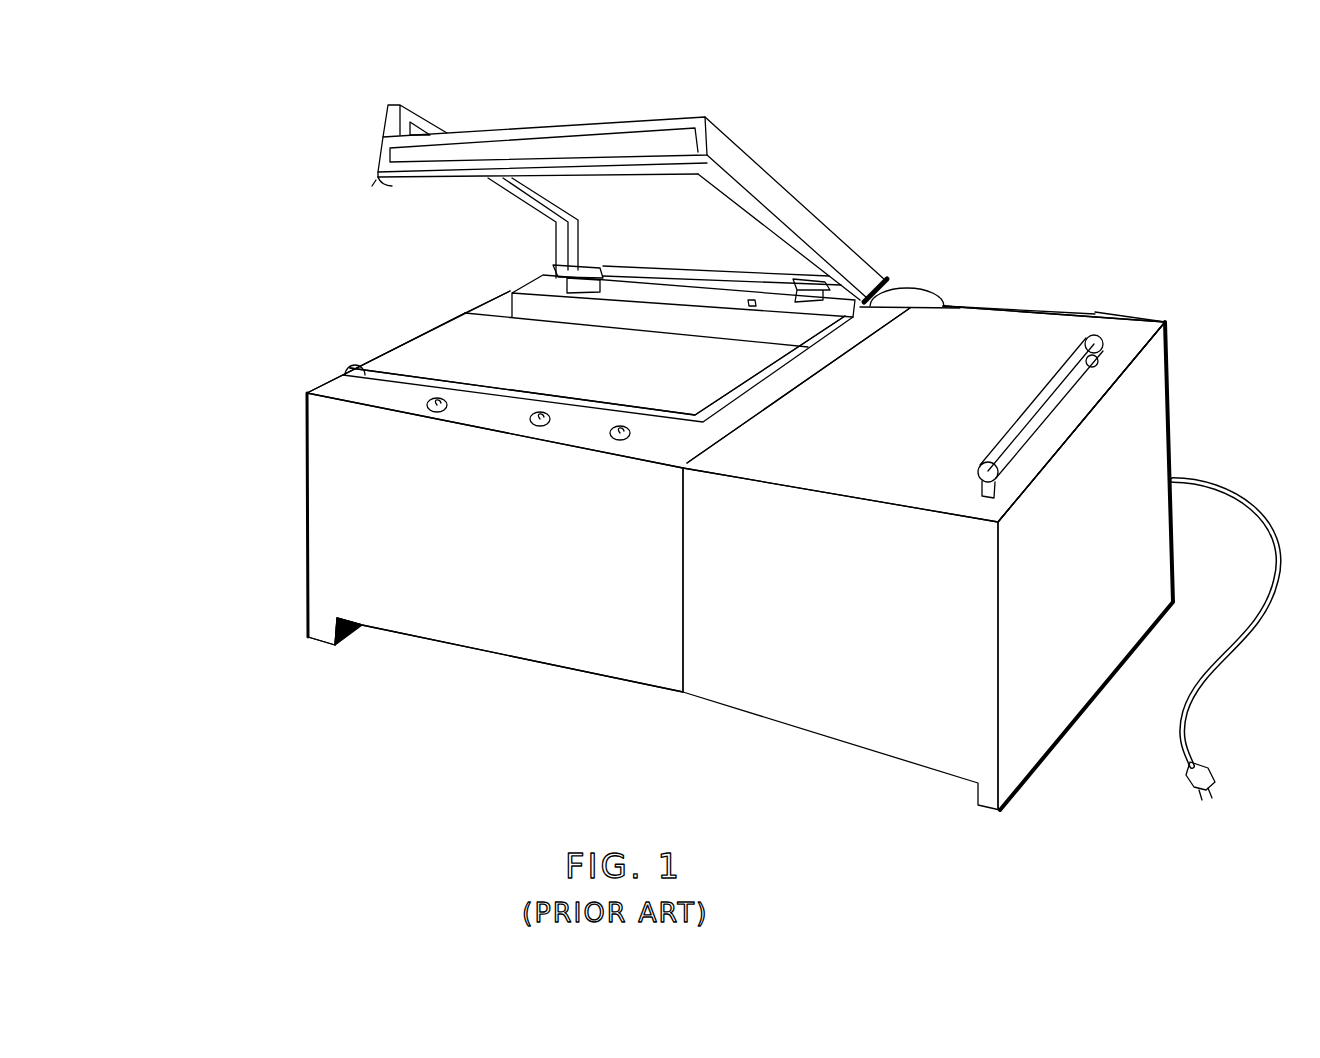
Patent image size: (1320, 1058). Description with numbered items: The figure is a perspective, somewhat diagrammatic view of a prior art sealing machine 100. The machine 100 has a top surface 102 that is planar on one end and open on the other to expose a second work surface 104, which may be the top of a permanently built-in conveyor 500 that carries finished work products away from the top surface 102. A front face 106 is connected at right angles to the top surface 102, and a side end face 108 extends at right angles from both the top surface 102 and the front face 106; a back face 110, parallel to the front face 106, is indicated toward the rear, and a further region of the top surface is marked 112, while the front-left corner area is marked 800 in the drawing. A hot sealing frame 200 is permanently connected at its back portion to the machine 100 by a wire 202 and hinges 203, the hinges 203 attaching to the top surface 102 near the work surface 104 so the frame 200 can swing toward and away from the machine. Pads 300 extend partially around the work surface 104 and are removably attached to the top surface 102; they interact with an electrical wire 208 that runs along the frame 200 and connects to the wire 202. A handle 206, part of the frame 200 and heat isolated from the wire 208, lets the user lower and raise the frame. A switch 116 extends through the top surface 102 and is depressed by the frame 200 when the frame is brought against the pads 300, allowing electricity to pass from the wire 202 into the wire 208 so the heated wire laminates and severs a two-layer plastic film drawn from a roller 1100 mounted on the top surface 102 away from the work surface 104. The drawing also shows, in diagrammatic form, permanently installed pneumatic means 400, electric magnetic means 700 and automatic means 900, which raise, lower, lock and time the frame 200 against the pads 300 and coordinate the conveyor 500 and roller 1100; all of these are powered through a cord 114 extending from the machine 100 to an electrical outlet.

The sealing machine 100 is at (266, 603).
The top surface 102 is at (663, 298).
The work surface 104 is at (597, 365).
The front face 106 is at (495, 542).
The side end face 108 is at (1085, 566).
The back face 110 is at (1100, 311).
The top surface rear portion 112 is at (1010, 288).
The cord 114 is at (1212, 674).
The switch 116 is at (752, 307).
The hot sealing frame 200 is at (662, 181).
The wire 202 is at (905, 290).
The hinges 203 is at (592, 266).
The handle 206 is at (516, 126).
The electrical wire 208 is at (740, 192).
The pads 300 is at (345, 374).
The pneumatic means 400 is at (432, 412).
The conveyor 500 is at (390, 337).
The electric magnetic means 700 is at (538, 426).
The rear edge region 800 is at (447, 311).
The automatic means 900 is at (617, 440).
The roller 1100 is at (1078, 362).